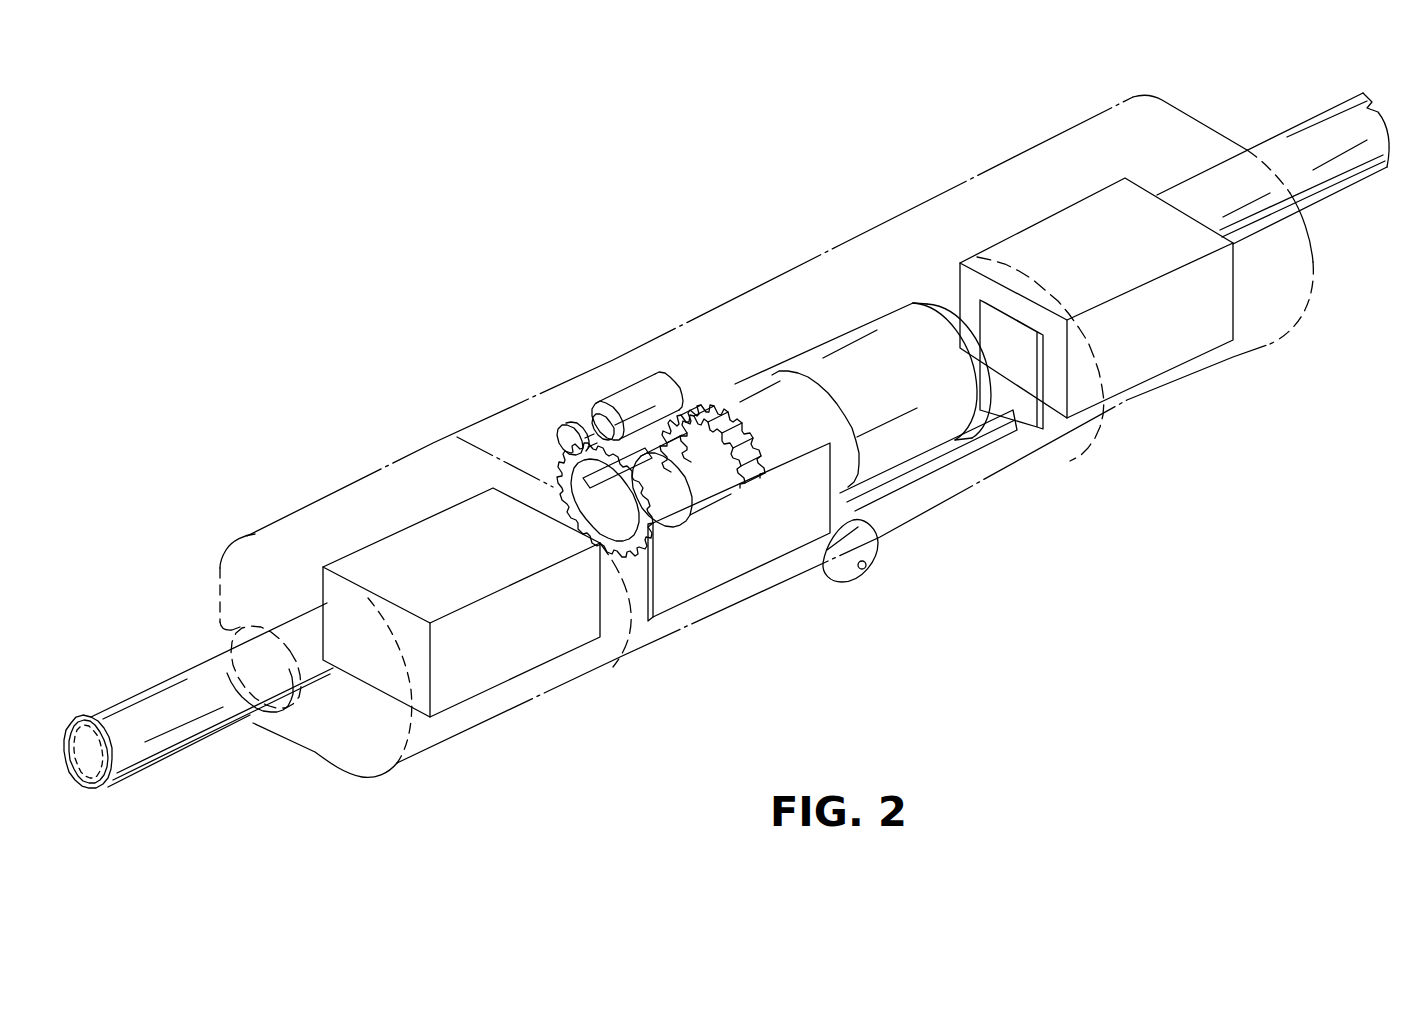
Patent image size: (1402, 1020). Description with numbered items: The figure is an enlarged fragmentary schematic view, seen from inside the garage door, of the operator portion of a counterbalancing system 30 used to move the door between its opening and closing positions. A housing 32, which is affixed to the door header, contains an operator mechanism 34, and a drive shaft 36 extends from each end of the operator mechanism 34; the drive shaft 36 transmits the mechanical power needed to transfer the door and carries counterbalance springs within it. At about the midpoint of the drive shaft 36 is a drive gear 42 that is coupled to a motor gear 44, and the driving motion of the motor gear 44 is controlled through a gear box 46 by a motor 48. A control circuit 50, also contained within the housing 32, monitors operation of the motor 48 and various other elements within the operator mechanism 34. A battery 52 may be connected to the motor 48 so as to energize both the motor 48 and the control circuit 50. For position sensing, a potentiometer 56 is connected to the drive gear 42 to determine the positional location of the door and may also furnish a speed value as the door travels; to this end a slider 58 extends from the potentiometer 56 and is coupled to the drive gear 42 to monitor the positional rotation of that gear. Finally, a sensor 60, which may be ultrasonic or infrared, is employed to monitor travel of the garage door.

The counterbalancing system 30 is at (669, 176).
The housing 32 is at (1177, 398).
The operator mechanism 34 is at (905, 492).
The drive shaft 36 is at (148, 740).
The drive gear 42 is at (593, 428).
The motor gear 44 is at (700, 433).
The gear box 46 is at (745, 400).
The motor 48 is at (935, 437).
The control circuit 50 is at (702, 598).
The battery 52 is at (473, 683).
The potentiometer 56 is at (638, 378).
The slider 58 is at (558, 435).
The sensor 60 is at (850, 582).